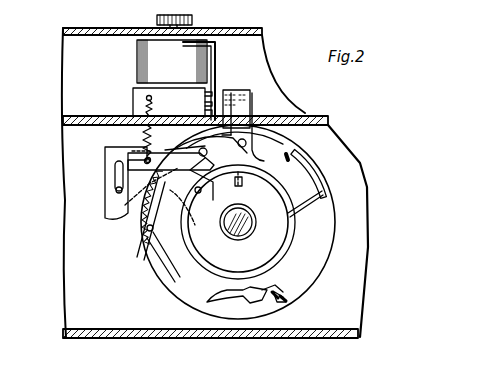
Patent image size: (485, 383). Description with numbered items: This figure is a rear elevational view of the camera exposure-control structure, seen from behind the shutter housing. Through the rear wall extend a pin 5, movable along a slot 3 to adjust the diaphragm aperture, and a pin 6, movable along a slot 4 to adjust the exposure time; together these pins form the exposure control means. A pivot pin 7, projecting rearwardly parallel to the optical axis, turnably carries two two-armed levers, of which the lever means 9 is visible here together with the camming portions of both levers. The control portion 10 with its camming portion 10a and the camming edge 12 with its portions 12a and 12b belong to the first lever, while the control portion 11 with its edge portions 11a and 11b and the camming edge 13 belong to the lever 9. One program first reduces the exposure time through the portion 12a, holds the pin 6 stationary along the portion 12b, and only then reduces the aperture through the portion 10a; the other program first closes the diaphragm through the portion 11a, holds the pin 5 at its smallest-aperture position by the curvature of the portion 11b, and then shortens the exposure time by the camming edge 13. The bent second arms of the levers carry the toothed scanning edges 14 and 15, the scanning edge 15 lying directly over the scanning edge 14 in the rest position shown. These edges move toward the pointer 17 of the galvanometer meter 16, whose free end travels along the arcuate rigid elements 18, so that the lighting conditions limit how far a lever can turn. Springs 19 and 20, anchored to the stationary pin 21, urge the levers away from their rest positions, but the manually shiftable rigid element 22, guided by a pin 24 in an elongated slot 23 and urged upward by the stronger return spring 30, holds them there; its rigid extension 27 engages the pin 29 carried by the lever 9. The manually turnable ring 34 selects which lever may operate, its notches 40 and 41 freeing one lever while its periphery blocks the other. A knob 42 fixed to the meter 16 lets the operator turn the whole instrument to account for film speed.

The slot 3 is at (170, 286).
The slot 4 is at (285, 298).
The pin 5 is at (207, 243).
The pin 6 is at (275, 295).
The pivot pin 7 is at (247, 144).
The lever means 9 is at (250, 133).
The control portion 10 is at (157, 207).
The camming portion 10a is at (125, 205).
The control portion 11 is at (150, 241).
The edge portion 11a is at (195, 212).
The edge portion 11b is at (135, 245).
The camming edge 12 is at (268, 305).
The camming portion 12a is at (282, 303).
The camming edge portion 12b is at (257, 302).
The camming edge 13 is at (243, 300).
The toothed scanning edge 14 is at (246, 122).
The toothed scanning edge 15 is at (226, 93).
The electrical meter 16 is at (153, 52).
The pointer 17 is at (220, 45).
The arcuate rigid elements 18 is at (161, 144).
The spring 19 is at (170, 280).
The spring 20 is at (167, 269).
The pin 21 is at (182, 300).
The manually shiftable rigid element 22 is at (110, 173).
The elongated slot 23 is at (118, 165).
The pin 24 is at (118, 191).
The rigid extension 27 is at (206, 169).
The pin 29 is at (264, 122).
The return spring 30 is at (143, 150).
The manually turnable ring 34 is at (285, 250).
The notch 40 is at (247, 182).
The notch 41 is at (203, 190).
The knob 42 is at (173, 83).